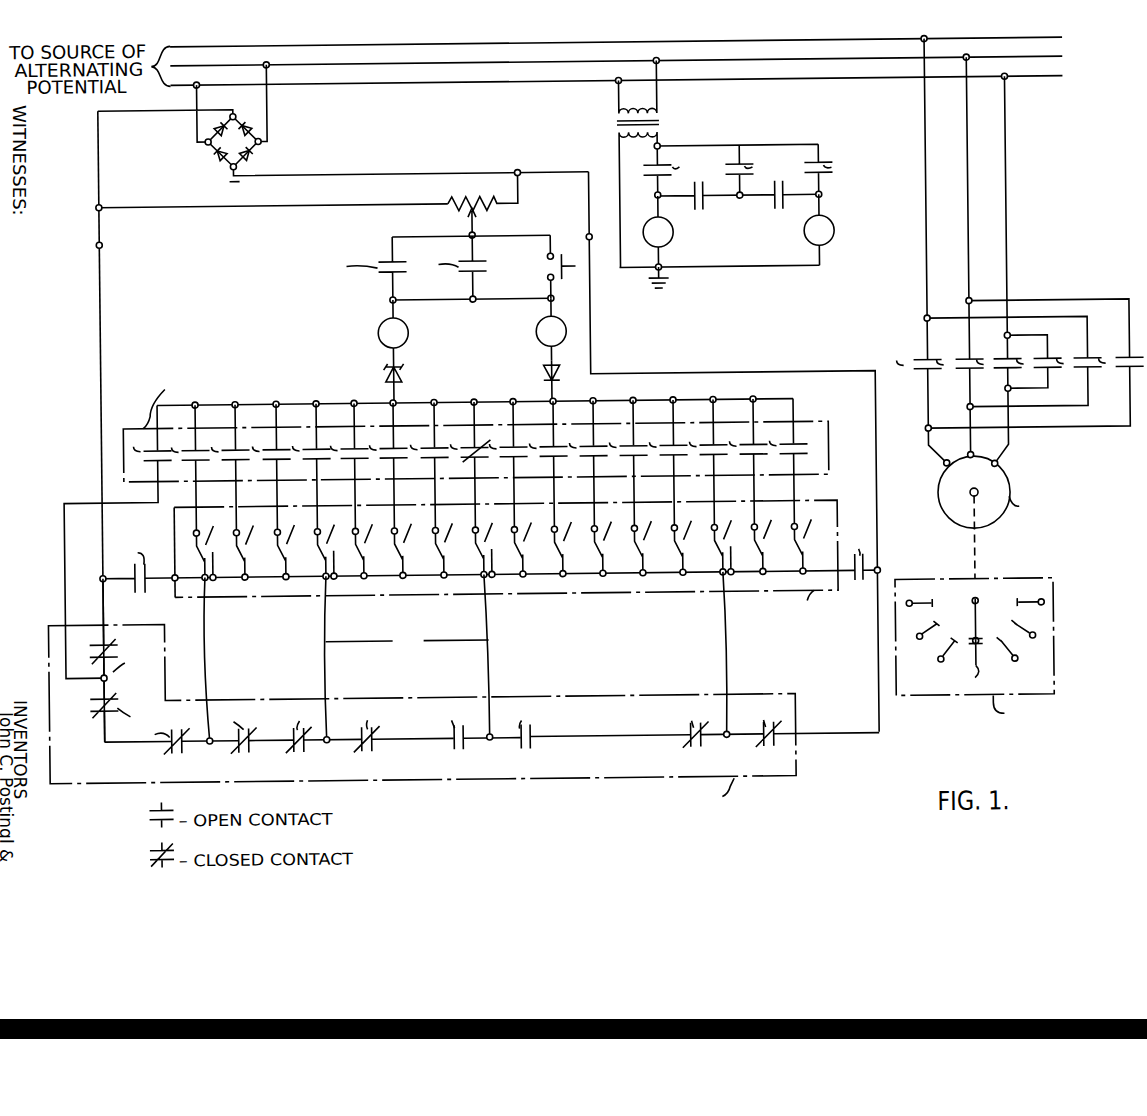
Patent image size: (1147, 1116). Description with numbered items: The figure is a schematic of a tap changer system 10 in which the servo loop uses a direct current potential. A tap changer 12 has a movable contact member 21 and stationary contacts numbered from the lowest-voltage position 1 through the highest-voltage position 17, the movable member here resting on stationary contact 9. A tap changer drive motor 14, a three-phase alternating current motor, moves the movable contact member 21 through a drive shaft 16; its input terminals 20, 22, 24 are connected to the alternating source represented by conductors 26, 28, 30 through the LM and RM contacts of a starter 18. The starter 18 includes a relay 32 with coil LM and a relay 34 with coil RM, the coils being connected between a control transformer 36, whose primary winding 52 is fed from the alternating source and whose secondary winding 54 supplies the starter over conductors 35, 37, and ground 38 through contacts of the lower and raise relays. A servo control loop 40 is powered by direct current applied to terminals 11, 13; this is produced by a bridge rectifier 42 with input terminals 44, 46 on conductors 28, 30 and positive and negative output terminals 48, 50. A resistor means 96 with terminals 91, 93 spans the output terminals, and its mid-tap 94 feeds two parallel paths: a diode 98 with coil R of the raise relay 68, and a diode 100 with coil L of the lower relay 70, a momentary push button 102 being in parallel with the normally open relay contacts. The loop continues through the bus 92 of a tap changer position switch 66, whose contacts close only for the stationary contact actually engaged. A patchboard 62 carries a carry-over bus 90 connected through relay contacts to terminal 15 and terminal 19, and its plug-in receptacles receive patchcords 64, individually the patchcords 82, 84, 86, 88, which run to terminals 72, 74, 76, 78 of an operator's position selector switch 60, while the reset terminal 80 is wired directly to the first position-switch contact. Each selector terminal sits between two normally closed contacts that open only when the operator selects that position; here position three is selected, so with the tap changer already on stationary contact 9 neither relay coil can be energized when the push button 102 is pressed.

The electrical conductor 26 is at (807, 42).
The electrical conductor 28 is at (807, 61).
The electrical conductor 30 is at (807, 81).
The single-phase full-wave bridge rectifier 42 is at (214, 149).
The input terminal 44 is at (210, 141).
The input terminal 46 is at (263, 140).
The positive output terminal 48 is at (249, 104).
The negative output terminal 50 is at (240, 166).
The terminal 91 is at (98, 203).
The terminal 11 is at (98, 241).
The terminal 93 is at (520, 169).
The resistor means 96 is at (455, 196).
The tap connection 94 is at (463, 224).
The terminal 13 is at (592, 238).
The momentary-make push button 102 is at (549, 259).
The servo control loop 40 is at (271, 316).
The raise relay 68 is at (386, 322).
The lower relay 70 is at (544, 320).
The asymmetrically conductive device 98 is at (401, 368).
The asymmetrically conductive device 100 is at (562, 382).
The source of potential 36 is at (636, 164).
The primary winding 52 is at (637, 87).
The secondary winding 54 is at (638, 199).
The conductor 37 is at (620, 153).
The conductor 35 is at (661, 145).
The starter means 18 is at (736, 206).
The relay 32 is at (672, 243).
The relay 34 is at (808, 241).
The ground 38 is at (672, 286).
The tap changer drive means 14 is at (1017, 307).
The input terminal 20 is at (944, 467).
The input terminal 22 is at (969, 459).
The input terminal 24 is at (997, 467).
The drive shaft 16 is at (971, 544).
The tap changer 12 is at (1011, 650).
The movable contact member 21 is at (970, 619).
The stationary contact 9 is at (972, 675).
The stationary contact 1 is at (908, 604).
The stationary contact 17 is at (1038, 604).
The tap changer position switch 66 is at (446, 510).
The bus 92 is at (210, 400).
The patchboard 62 is at (492, 562).
The terminal 15 is at (99, 573).
The carry-over bus 90 is at (174, 554).
The terminal 19 is at (878, 568).
The patchcord 82 is at (204, 657).
The patchcord 84 is at (323, 653).
The patchcord 86 is at (487, 650).
The patchcord 88 is at (722, 656).
The patchcords 64 is at (416, 648).
The operator's position selector switch 60 is at (464, 693).
The terminal 80 is at (107, 676).
The terminal 72 is at (206, 734).
The terminal 74 is at (324, 735).
The terminal 76 is at (485, 735).
The terminal 78 is at (721, 735).
The tap changer system 10 is at (884, 768).